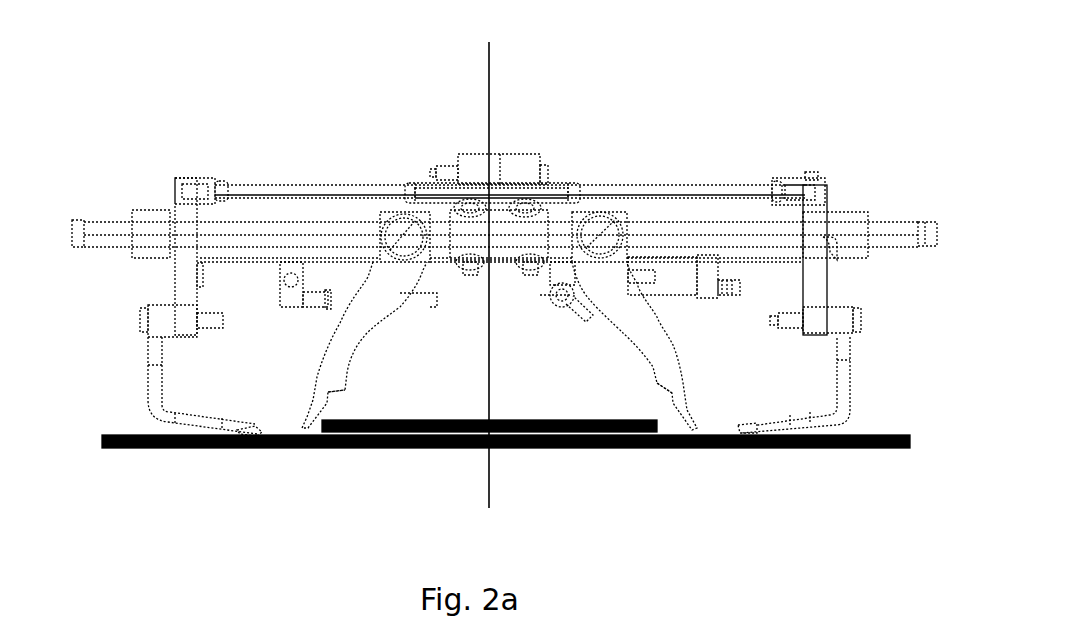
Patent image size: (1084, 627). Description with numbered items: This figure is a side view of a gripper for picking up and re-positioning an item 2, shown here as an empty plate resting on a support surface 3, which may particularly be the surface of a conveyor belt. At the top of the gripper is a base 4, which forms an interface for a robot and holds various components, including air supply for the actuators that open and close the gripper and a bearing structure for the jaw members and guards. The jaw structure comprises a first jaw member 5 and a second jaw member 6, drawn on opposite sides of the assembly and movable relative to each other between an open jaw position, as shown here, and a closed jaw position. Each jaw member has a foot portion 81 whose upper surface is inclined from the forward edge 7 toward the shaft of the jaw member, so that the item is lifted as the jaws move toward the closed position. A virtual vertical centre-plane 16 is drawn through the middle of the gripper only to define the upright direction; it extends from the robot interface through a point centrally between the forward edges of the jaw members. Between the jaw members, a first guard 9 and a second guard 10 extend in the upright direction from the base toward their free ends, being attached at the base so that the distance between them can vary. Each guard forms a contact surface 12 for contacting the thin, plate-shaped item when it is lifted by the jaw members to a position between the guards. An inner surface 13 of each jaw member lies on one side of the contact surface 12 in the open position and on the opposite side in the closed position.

The item 2 is at (533, 422).
The support surface 3 is at (855, 435).
The base 4 is at (546, 162).
The first jaw member 5 is at (168, 268).
The second jaw member 6 is at (817, 292).
The forward edge 7 is at (238, 420).
The first guard 9 is at (380, 293).
The second guard 10 is at (618, 318).
The contact surface 12 is at (328, 402).
The inner surface 13 is at (150, 387).
The vertical centre-plane 16 is at (490, 100).
The foot portion 81 is at (185, 423).